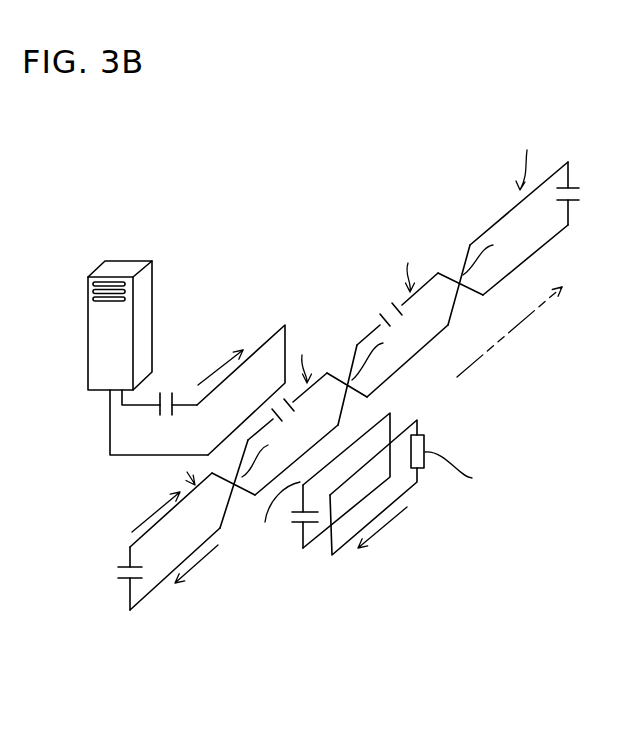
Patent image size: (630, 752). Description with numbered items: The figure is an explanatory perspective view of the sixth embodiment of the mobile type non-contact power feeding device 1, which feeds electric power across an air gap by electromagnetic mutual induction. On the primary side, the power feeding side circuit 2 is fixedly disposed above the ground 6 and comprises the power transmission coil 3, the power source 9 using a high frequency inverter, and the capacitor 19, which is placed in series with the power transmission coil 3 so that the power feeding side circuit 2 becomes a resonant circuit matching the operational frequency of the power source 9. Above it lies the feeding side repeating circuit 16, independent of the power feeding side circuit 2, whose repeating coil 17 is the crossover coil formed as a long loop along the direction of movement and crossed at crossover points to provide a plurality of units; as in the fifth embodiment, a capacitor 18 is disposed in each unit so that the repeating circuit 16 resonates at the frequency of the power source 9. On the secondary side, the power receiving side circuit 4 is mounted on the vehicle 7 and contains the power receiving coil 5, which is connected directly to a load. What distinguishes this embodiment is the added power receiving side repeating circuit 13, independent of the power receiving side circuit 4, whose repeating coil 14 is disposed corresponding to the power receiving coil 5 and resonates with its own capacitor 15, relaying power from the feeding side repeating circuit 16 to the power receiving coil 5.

The mobile type non-contact power feeding device 1 is at (196, 155).
The power feeding side circuit 2 is at (237, 204).
The power transmission coil 3 is at (263, 343).
The power receiving side circuit 4 is at (450, 545).
The power receiving coil 5 is at (410, 492).
The ground 6 is at (306, 144).
The vehicle 7 is at (433, 400).
The power source 9 is at (131, 268).
The repeating circuit 13 is at (345, 610).
The repeating coil 14 is at (314, 533).
The capacitor 15 is at (291, 519).
The repeating circuit 16 is at (62, 657).
The repeating coil 17 is at (113, 585).
The capacitor 18 is at (297, 415).
The capacitor 19 is at (167, 418).